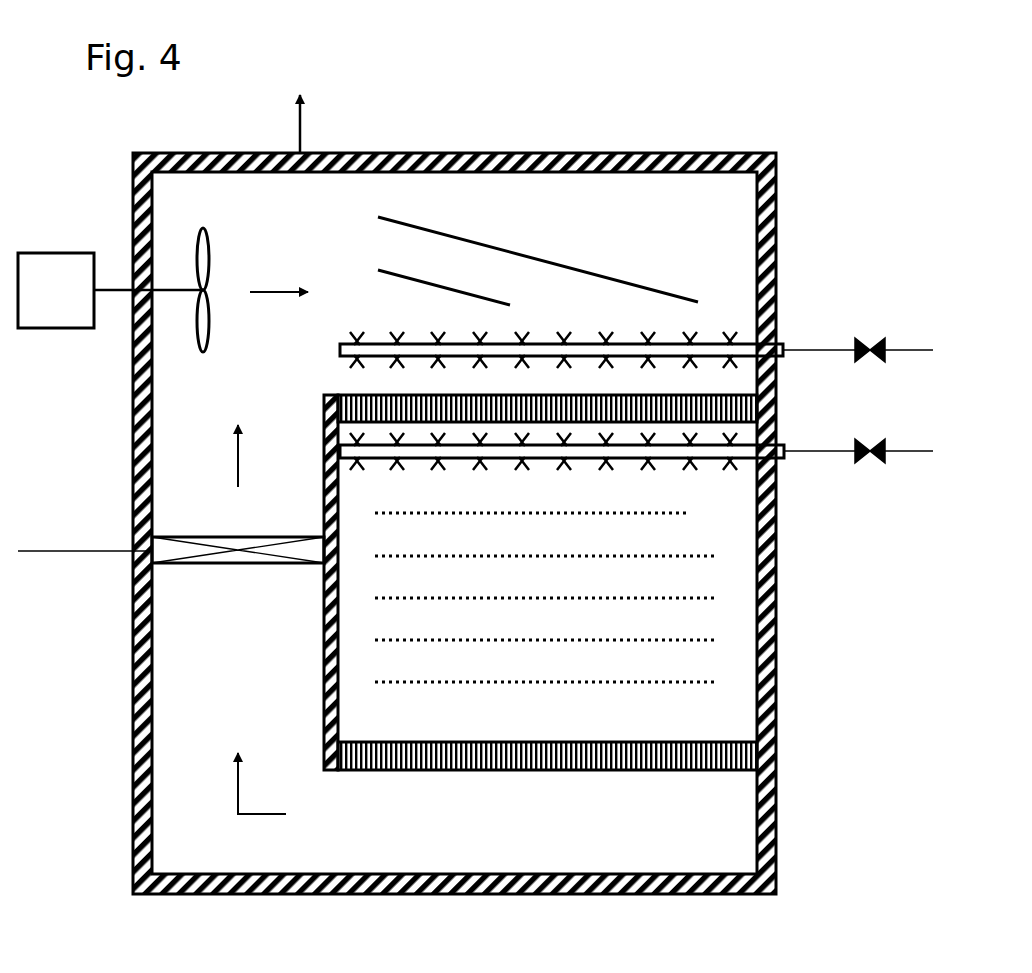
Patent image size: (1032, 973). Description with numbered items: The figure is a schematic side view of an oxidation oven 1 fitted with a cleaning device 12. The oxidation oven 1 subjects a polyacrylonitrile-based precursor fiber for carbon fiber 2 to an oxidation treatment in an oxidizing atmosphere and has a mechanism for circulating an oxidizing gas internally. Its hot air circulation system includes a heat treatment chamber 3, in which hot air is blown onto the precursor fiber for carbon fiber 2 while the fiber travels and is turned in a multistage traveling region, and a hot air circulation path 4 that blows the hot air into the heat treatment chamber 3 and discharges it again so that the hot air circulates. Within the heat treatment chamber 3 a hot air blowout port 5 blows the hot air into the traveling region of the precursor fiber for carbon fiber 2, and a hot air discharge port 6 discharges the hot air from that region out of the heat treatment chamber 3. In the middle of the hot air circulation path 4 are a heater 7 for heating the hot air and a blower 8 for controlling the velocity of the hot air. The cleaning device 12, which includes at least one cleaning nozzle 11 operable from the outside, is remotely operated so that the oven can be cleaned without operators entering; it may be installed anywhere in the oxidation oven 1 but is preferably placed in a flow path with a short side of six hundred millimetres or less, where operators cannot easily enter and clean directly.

The oxidation oven 1 is at (778, 172).
The precursor fiber for carbon fiber 2 is at (693, 512).
The heat treatment chamber 3 is at (730, 708).
The hot air circulation path 4 is at (172, 696).
The hot air blowout port 5 is at (777, 403).
The hot air discharge port 6 is at (733, 755).
The heater 7 is at (247, 565).
The blower 8 is at (210, 232).
The cleaning nozzle 11 is at (355, 335).
The cleaning device 12 is at (783, 349).